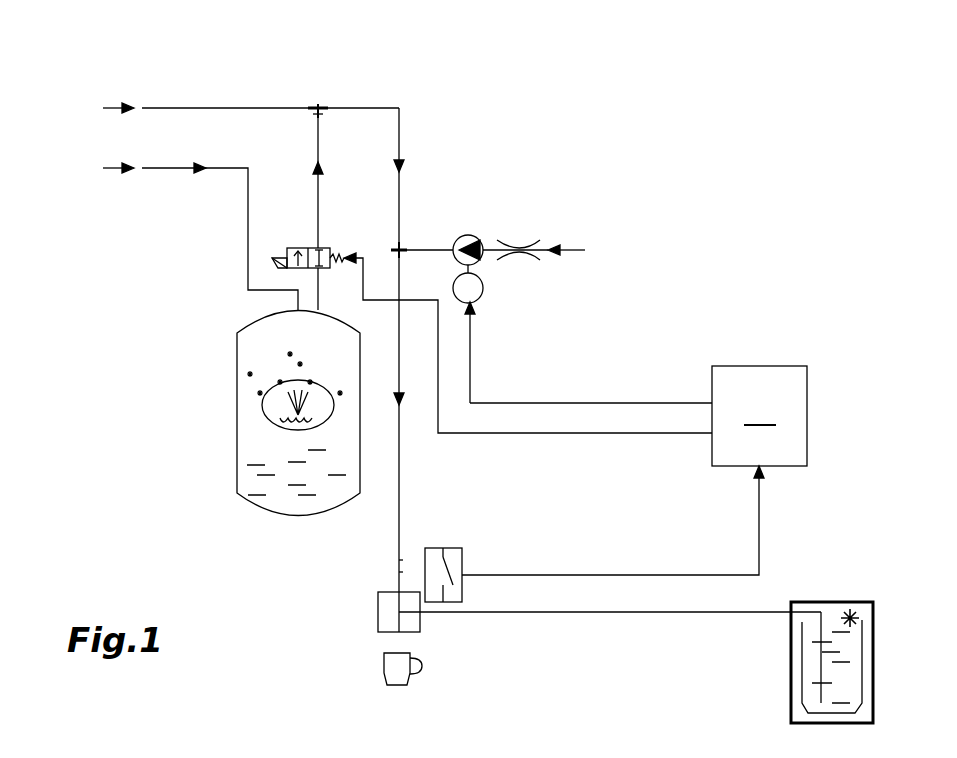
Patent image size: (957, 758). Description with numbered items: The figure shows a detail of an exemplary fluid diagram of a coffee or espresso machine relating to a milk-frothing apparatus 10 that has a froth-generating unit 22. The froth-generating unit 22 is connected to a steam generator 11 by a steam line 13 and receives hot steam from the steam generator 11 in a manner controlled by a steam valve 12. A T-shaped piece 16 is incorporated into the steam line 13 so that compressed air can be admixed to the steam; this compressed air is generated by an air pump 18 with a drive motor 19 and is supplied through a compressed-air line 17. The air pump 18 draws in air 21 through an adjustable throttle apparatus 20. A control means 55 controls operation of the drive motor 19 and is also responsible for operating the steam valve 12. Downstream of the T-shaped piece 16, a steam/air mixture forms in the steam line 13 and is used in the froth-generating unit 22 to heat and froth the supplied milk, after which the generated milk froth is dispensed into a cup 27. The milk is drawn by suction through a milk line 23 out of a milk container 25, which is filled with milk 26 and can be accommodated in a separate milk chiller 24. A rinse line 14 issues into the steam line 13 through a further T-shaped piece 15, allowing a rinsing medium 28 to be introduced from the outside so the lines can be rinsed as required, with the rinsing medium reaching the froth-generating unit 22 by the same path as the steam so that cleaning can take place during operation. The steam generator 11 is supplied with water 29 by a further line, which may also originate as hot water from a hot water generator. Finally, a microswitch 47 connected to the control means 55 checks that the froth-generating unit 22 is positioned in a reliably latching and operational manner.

The milk-frothing apparatus 10 is at (552, 550).
The steam generator 11 is at (245, 420).
The steam valve 12 is at (278, 268).
The steam line 13 is at (370, 105).
The rinse line 14 is at (240, 108).
The further T-shaped piece 15 is at (317, 103).
The T-shaped piece 16 is at (397, 248).
The compressed-air line 17 is at (432, 250).
The air pump 18 is at (480, 245).
The drive motor 19 is at (480, 300).
The throttle apparatus 20 is at (522, 253).
The air 21 is at (585, 245).
The froth-generating unit 22 is at (365, 614).
The milk line 23 is at (515, 612).
The milk chiller 24 is at (830, 602).
The milk container 25 is at (864, 650).
The milk 26 is at (838, 674).
The cup 27 is at (392, 672).
The rinsing medium 28 is at (118, 104).
The water 29 is at (112, 171).
The microswitch 47 is at (455, 602).
The control means 55 is at (575, 414).